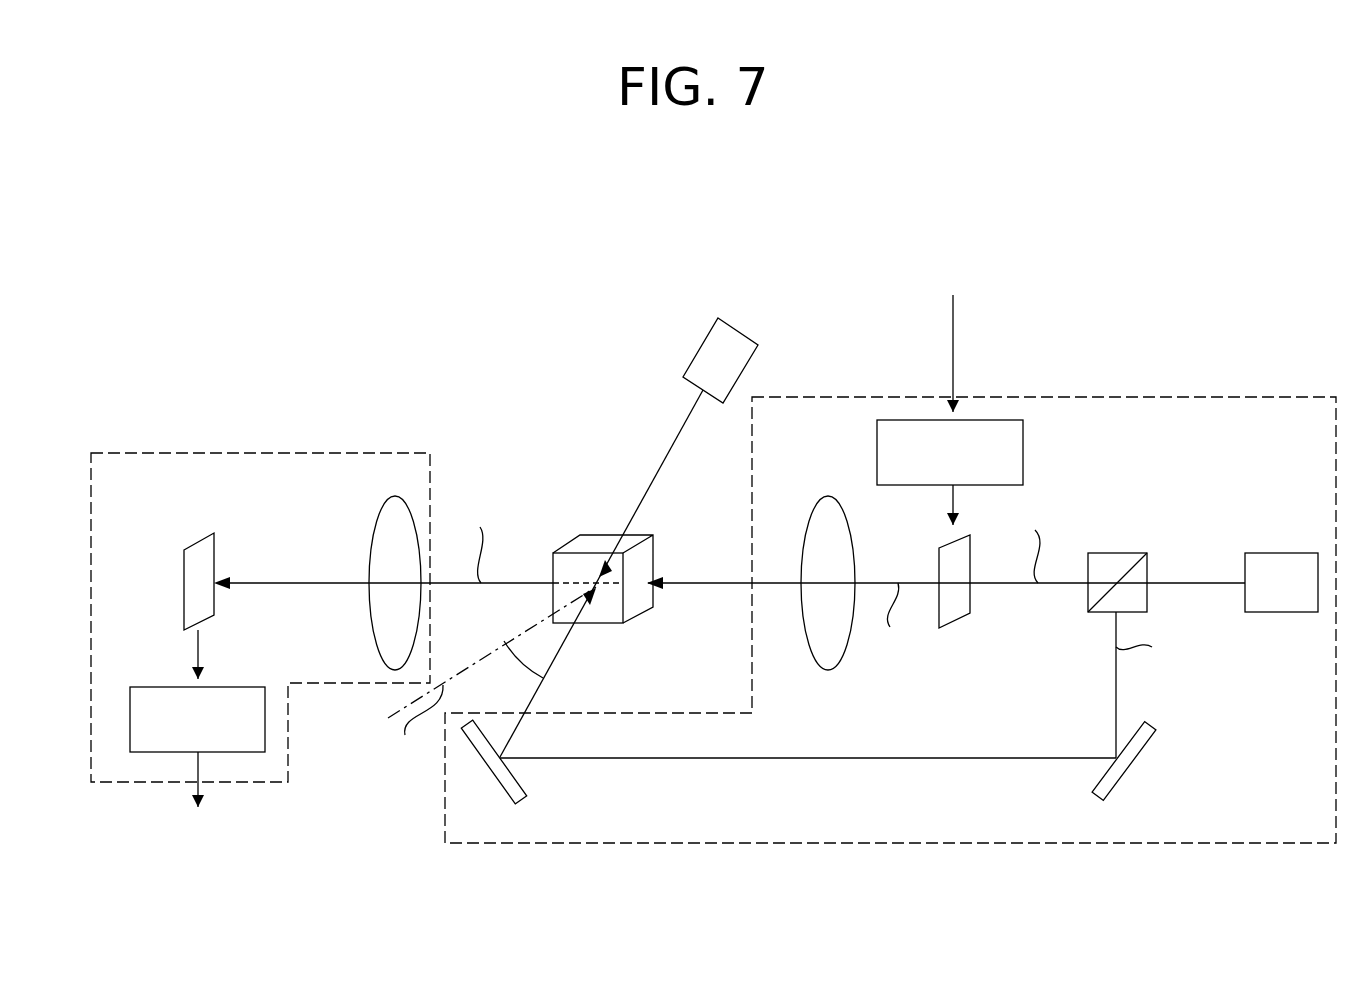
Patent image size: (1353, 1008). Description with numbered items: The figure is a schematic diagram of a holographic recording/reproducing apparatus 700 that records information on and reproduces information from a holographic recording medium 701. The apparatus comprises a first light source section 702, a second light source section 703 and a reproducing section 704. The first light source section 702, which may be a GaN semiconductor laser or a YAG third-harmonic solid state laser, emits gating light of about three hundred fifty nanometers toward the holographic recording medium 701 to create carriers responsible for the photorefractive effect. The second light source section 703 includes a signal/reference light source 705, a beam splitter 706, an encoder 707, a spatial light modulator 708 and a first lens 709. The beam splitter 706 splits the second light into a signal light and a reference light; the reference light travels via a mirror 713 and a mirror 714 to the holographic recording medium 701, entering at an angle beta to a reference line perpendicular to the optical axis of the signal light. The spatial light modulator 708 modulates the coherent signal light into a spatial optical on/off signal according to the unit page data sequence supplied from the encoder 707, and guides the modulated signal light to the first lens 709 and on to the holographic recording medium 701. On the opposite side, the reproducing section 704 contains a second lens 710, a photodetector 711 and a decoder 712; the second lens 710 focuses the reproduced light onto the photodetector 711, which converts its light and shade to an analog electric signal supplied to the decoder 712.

The holographic recording/reproducing apparatus 700 is at (1090, 298).
The holographic recording medium 701 is at (568, 550).
The first light source section 702 is at (702, 343).
The second light source section 703 is at (813, 397).
The reproducing section 704 is at (355, 452).
The signal/reference light source 705 is at (1258, 553).
The beam splitter 706 is at (1113, 553).
The encoder 707 is at (1023, 449).
The spatial light modulator 708 is at (958, 622).
The first lens 709 is at (815, 515).
The second lens 710 is at (370, 545).
The photodetector 711 is at (184, 548).
The decoder 712 is at (152, 687).
The mirror 713 is at (1120, 775).
The mirror 714 is at (523, 785).